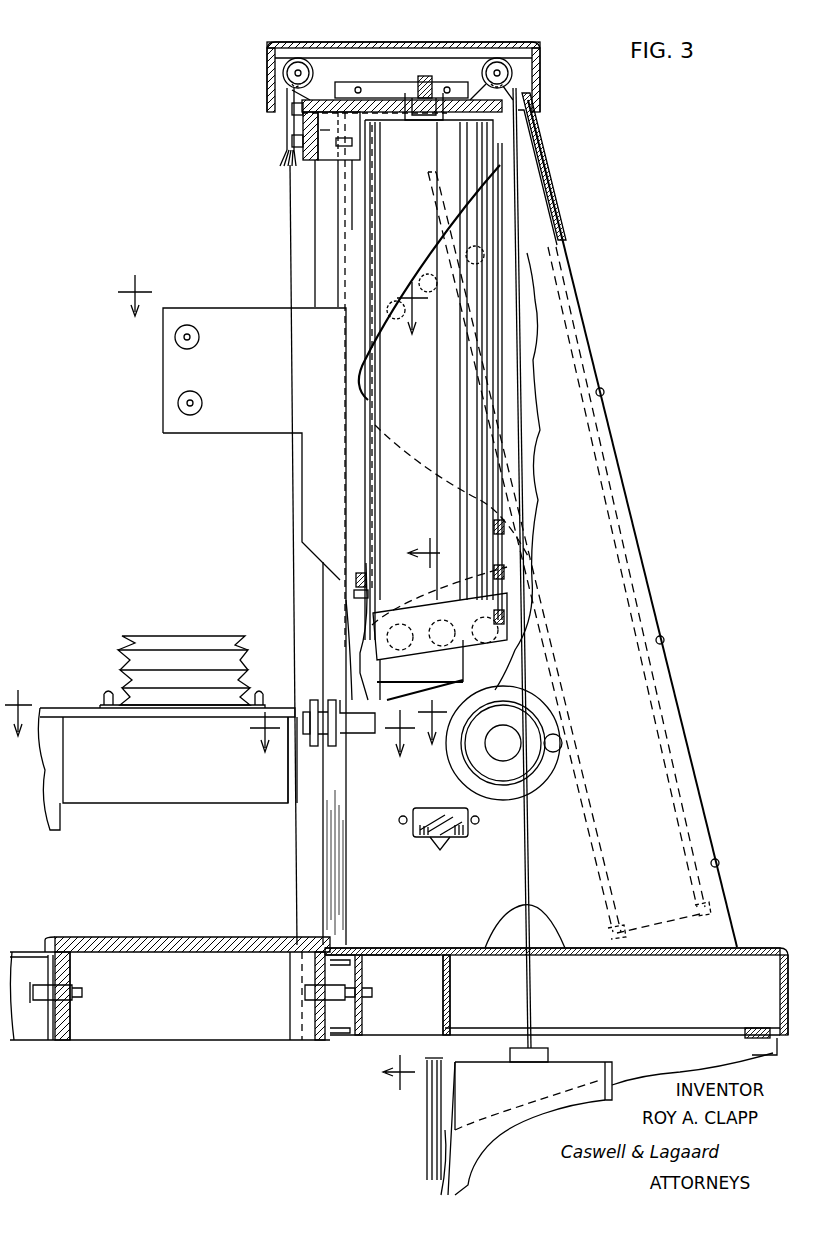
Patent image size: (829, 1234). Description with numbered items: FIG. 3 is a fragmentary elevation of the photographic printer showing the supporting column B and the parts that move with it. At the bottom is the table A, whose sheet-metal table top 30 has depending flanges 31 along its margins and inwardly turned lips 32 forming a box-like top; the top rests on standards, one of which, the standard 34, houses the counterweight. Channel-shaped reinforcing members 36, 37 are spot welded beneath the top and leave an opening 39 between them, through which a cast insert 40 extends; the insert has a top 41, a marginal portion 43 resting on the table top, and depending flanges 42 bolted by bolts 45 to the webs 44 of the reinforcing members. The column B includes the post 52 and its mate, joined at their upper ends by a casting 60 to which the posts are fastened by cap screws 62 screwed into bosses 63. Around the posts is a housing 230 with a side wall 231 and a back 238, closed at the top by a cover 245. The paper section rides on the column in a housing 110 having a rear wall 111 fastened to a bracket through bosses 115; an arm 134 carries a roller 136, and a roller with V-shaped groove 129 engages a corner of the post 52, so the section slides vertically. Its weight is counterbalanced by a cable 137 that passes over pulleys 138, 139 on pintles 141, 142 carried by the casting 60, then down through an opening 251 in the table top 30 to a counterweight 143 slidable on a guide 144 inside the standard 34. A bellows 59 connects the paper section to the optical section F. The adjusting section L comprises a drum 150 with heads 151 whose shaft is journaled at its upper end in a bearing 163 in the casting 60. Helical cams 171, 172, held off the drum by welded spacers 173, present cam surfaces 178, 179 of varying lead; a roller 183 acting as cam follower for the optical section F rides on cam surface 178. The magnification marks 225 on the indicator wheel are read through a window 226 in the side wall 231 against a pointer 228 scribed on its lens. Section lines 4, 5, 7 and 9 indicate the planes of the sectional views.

The table top 30 is at (720, 945).
The depending flanges 31 is at (780, 978).
The lips 32 is at (765, 1025).
The standard 34 is at (440, 1090).
The reinforcing member 36 is at (48, 1030).
The reinforcing member 37 is at (362, 1012).
The opening 39 is at (316, 960).
The insert 40 is at (80, 937).
The top 41 is at (205, 937).
The flanges 42 is at (68, 1025).
The marginal portion 43 is at (46, 940).
The webs 44 is at (90, 950).
The bolts 45 is at (80, 992).
The post 52 is at (300, 858).
The bellows 59 is at (190, 670).
The casting 60 is at (383, 100).
The cap screws 62 is at (292, 142).
The bosses 63 is at (352, 160).
The housing 110 is at (163, 433).
The rear wall 111 is at (232, 410).
The bosses 115 is at (192, 390).
The V-shaped groove 129 is at (332, 742).
The arm 134 is at (350, 663).
The roller 136 is at (318, 735).
The cable 137 is at (435, 60).
The pulley 138 is at (293, 62).
The pulley 139 is at (510, 66).
The pintle 141 is at (293, 78).
The pintle 142 is at (512, 76).
The counterweight 143 is at (600, 1068).
The guide 144 is at (450, 1060).
The drum 150 is at (472, 440).
The heads 151 is at (402, 120).
The bearing 163 is at (428, 90).
The helical cam 171 is at (470, 640).
The helical cam 172 is at (414, 270).
The spacers 173 is at (555, 190).
The cam surface 178 is at (427, 625).
The cam surface 179 is at (418, 242).
The roller 183 is at (358, 573).
The marks 225 is at (440, 838).
The window 226 is at (414, 814).
The pointer 228 is at (440, 812).
The housing 230 is at (650, 573).
The side wall 231 is at (625, 672).
The back 238 is at (565, 212).
The cover 245 is at (352, 45).
The opening 251 is at (535, 955).
The table A is at (770, 946).
The column B is at (290, 205).
The optical section F is at (157, 790).
The adjusting section L is at (500, 360).
The section line 4 is at (332, 743).
The section line 5 is at (403, 814).
The section line 7 is at (273, 314).
The section line 9 is at (226, 728).